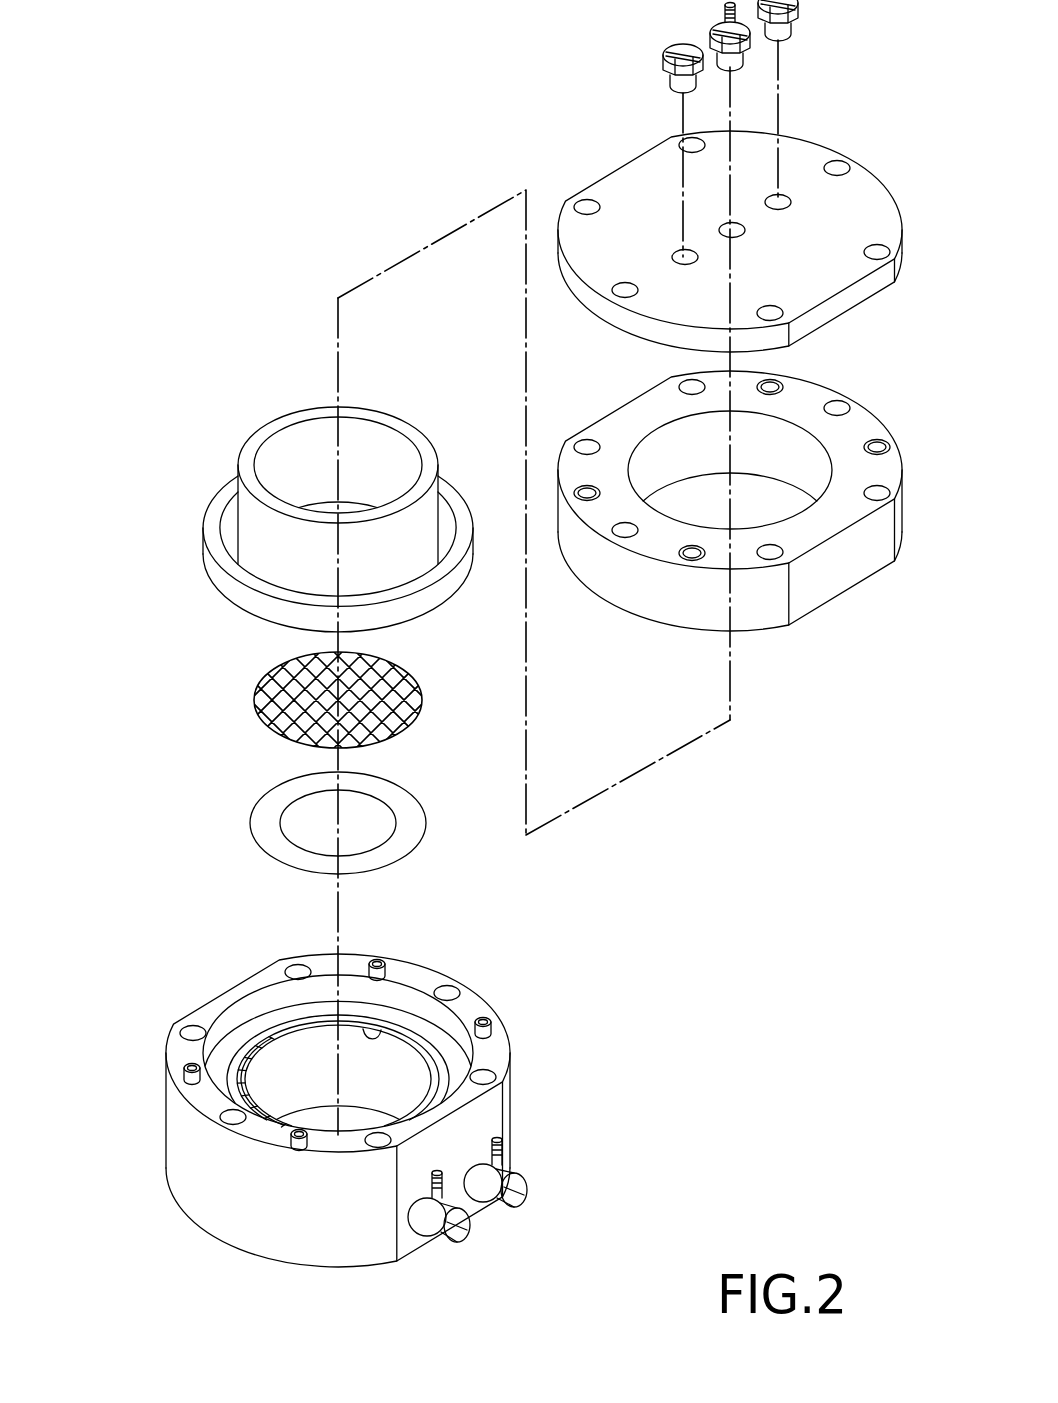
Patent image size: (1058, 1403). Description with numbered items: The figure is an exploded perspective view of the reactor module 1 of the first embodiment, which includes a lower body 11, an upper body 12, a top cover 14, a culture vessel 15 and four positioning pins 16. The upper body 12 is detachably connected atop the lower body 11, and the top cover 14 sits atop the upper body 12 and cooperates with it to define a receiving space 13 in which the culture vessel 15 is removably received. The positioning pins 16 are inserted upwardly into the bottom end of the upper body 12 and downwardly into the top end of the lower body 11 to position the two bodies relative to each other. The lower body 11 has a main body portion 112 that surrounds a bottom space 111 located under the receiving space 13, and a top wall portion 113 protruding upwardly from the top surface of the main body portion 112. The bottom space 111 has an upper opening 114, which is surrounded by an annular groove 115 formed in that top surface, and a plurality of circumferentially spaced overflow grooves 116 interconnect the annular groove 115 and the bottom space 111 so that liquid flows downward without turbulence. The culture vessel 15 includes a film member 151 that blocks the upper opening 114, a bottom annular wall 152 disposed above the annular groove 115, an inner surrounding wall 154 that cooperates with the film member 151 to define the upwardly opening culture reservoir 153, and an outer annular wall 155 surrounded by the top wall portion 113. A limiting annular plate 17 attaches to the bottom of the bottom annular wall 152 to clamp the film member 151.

The reactor module 1 is at (318, 167).
The lower body 11 is at (150, 1148).
The bottom space 111 is at (300, 1052).
The main body portion 112 is at (223, 1248).
The top wall portion 113 is at (448, 1022).
The upper opening 114 is at (381, 1040).
The annular groove 115 is at (448, 1078).
The overflow grooves 116 is at (242, 1050).
The upper body 12 is at (625, 423).
The receiving space 13 is at (233, 1001).
The top cover 14 is at (619, 183).
The culture vessel 15 is at (283, 385).
The film member 151 is at (259, 698).
The bottom annular wall 152 is at (230, 524).
The culture reservoir 153 is at (385, 448).
The inner surrounding wall 154 is at (357, 413).
The outer annular wall 155 is at (210, 562).
The positioning pins 16 is at (379, 958).
The limiting annular plate 17 is at (262, 815).